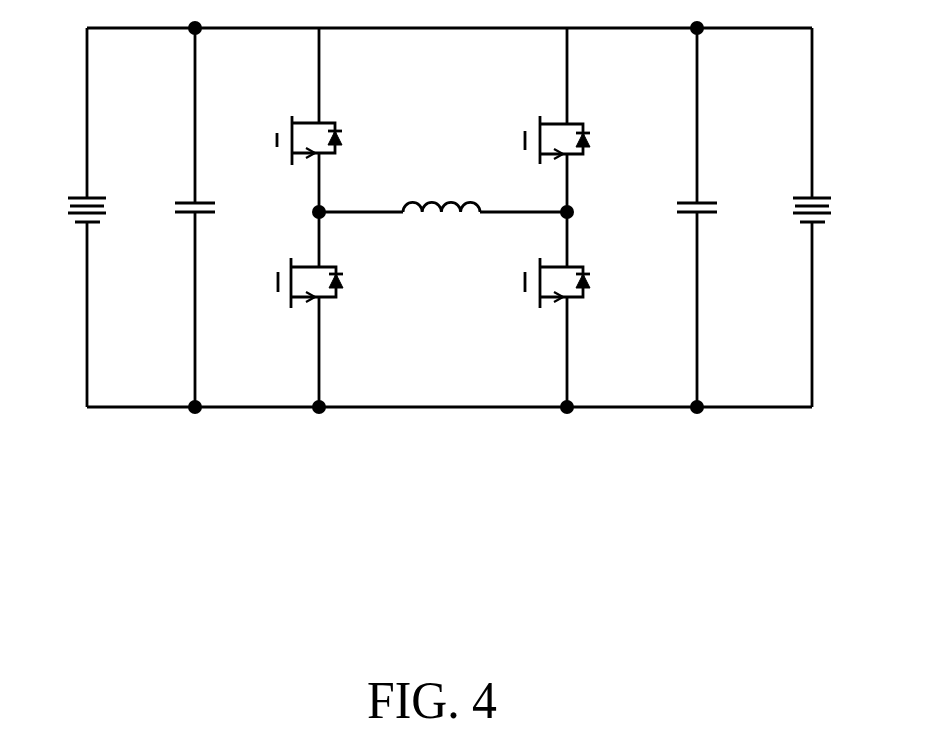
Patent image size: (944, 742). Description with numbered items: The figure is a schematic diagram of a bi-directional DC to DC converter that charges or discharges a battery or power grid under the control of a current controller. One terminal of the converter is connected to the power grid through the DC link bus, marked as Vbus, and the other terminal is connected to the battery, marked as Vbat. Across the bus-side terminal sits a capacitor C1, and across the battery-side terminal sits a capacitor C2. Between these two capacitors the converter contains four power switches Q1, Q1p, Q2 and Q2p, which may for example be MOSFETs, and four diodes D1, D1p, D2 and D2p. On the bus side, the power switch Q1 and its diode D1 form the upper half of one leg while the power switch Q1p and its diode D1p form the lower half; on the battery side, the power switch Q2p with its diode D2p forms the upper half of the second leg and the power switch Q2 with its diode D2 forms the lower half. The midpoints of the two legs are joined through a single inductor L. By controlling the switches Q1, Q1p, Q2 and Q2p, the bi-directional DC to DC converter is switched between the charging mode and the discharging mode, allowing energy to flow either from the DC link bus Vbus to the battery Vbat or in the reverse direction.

The DC link bus Vbus is at (65, 217).
The capacitor C1 is at (177, 217).
The power switch Q1 is at (275, 137).
The diode D1 is at (356, 140).
The power switch Q1p is at (273, 283).
The diode D1p is at (357, 287).
The inductor L is at (443, 187).
The power switch Q2p is at (519, 139).
The diode D2p is at (605, 138).
The power switch Q2 is at (522, 283).
The diode D2 is at (600, 287).
The capacitor C2 is at (677, 217).
The battery Vbat is at (832, 217).